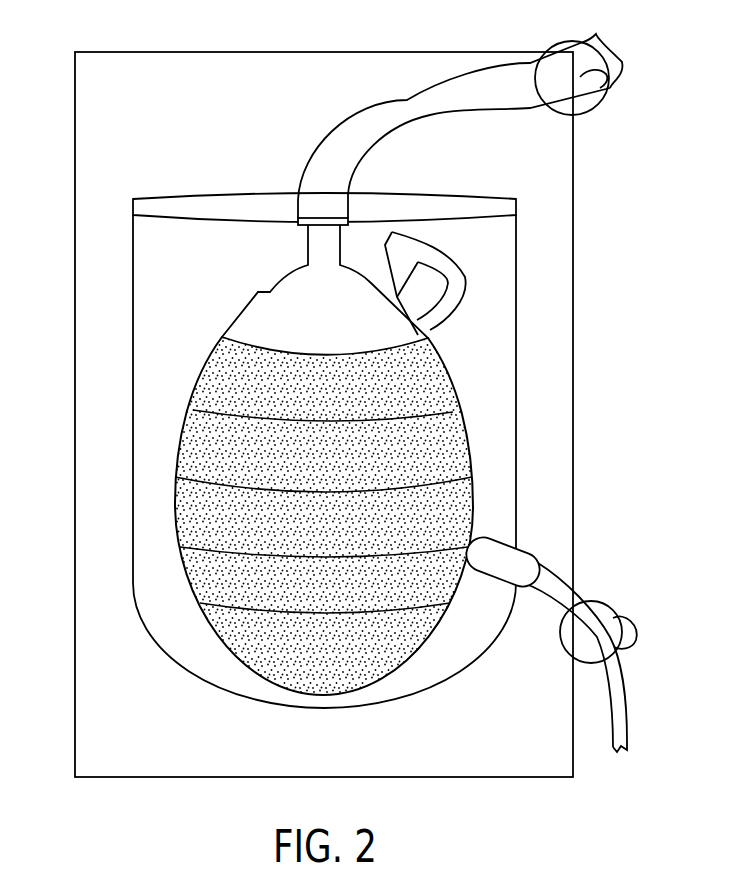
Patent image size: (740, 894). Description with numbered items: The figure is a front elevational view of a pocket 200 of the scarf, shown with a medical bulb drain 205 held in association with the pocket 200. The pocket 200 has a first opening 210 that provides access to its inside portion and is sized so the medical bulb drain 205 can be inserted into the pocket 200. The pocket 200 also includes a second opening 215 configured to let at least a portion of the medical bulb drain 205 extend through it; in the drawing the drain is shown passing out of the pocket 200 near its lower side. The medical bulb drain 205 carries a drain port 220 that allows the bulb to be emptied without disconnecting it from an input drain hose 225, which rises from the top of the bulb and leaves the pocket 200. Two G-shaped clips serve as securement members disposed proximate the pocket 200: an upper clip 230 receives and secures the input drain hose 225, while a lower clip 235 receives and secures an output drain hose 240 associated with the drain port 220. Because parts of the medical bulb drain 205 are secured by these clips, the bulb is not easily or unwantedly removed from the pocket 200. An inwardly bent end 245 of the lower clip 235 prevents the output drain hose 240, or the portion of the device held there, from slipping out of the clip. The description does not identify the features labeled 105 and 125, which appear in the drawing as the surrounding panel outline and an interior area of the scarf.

The pocket 200 is at (92, 122).
The housing 105 is at (573, 310).
The interior chamber 125 is at (172, 103).
The medical bulb drain 205 is at (341, 450).
The first opening 210 is at (233, 193).
The second opening 215 is at (557, 467).
The drain port 220 is at (515, 555).
The input drain hose 225 is at (362, 147).
The upper clip 230 is at (597, 110).
The lower clip 235 is at (630, 643).
The output drain hose 240 is at (557, 570).
The inwardly bent end 245 is at (635, 628).